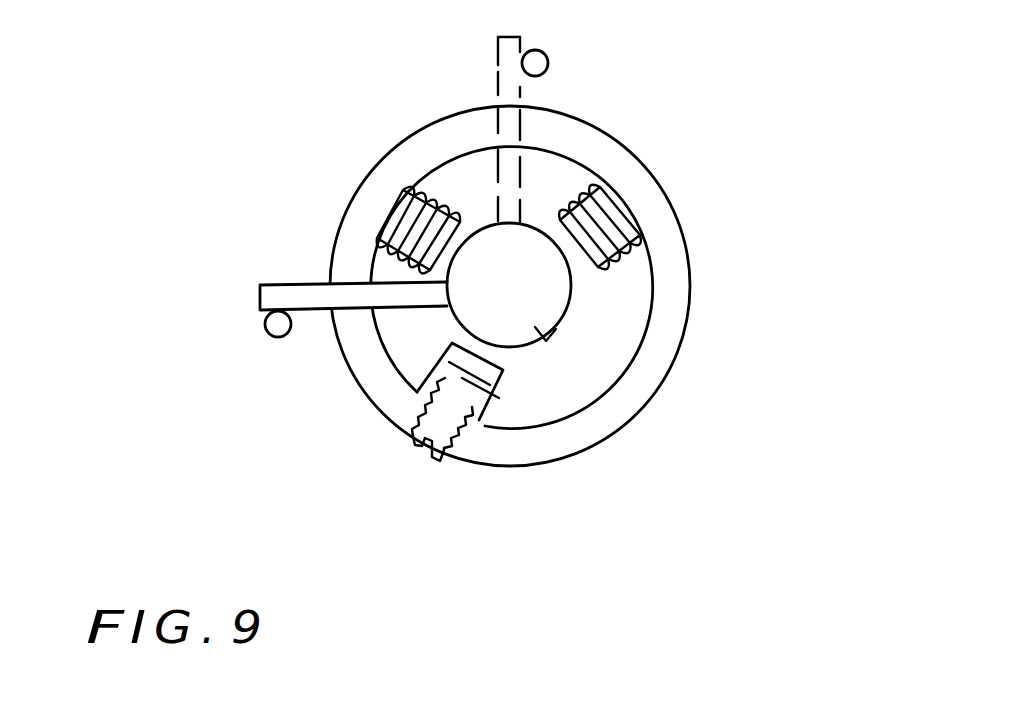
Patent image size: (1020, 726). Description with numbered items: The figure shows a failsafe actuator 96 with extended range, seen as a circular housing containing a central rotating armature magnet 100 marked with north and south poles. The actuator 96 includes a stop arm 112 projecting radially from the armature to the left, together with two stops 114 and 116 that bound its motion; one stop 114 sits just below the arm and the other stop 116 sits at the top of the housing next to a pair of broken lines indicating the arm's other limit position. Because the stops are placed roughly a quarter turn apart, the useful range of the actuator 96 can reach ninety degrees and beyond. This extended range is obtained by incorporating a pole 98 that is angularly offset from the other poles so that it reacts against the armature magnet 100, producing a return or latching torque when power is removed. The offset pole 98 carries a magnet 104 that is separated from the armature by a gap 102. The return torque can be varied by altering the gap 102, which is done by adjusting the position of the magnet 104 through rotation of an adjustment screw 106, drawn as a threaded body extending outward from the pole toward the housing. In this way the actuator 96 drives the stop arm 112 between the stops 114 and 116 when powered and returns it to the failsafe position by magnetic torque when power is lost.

The actuator 96 is at (708, 110).
The pole 98 is at (483, 412).
The armature magnet 100 is at (546, 341).
The gap 102 is at (503, 357).
The magnet 104 is at (480, 394).
The adjustment screw 106 is at (438, 463).
The stop arm 112 is at (260, 286).
The stop 114 is at (267, 333).
The stop 116 is at (545, 52).